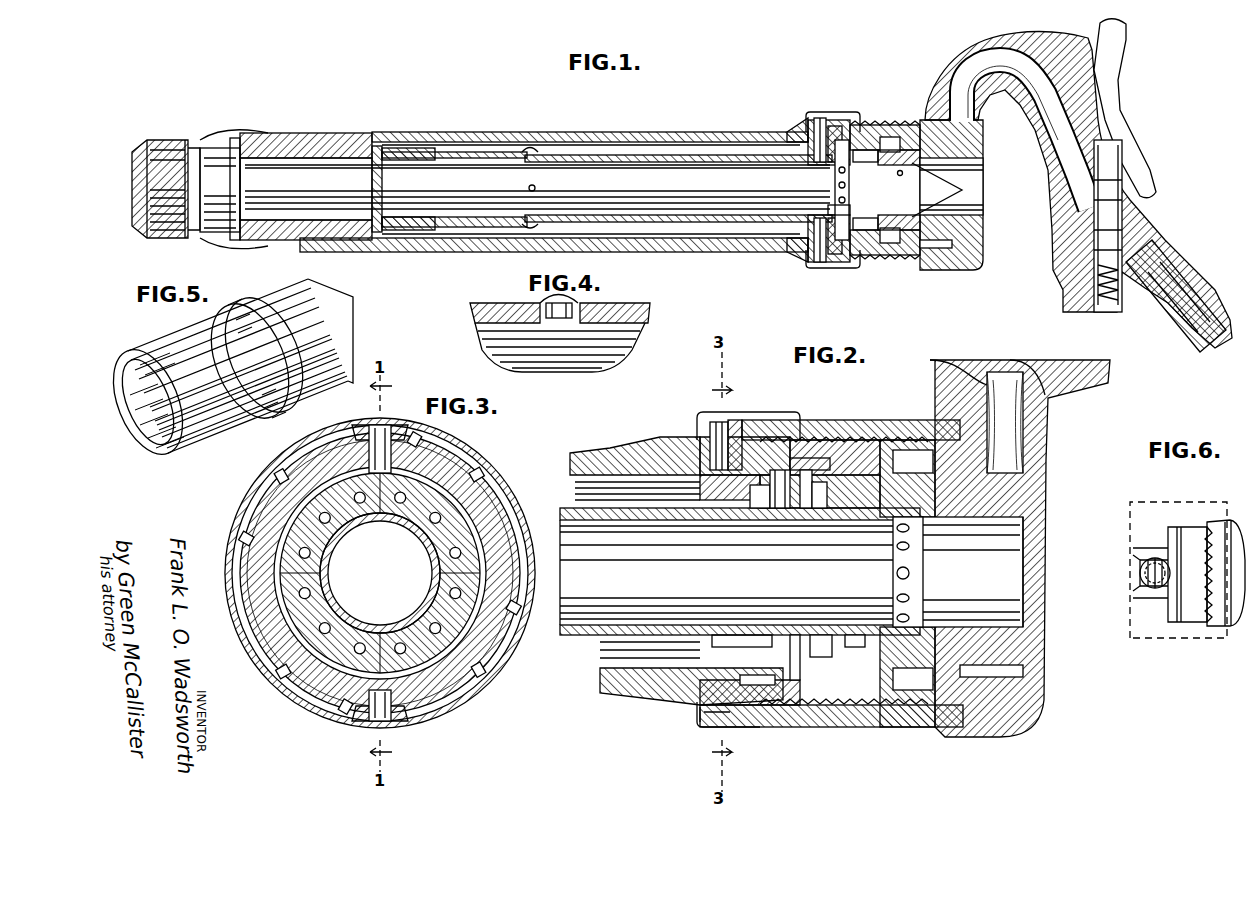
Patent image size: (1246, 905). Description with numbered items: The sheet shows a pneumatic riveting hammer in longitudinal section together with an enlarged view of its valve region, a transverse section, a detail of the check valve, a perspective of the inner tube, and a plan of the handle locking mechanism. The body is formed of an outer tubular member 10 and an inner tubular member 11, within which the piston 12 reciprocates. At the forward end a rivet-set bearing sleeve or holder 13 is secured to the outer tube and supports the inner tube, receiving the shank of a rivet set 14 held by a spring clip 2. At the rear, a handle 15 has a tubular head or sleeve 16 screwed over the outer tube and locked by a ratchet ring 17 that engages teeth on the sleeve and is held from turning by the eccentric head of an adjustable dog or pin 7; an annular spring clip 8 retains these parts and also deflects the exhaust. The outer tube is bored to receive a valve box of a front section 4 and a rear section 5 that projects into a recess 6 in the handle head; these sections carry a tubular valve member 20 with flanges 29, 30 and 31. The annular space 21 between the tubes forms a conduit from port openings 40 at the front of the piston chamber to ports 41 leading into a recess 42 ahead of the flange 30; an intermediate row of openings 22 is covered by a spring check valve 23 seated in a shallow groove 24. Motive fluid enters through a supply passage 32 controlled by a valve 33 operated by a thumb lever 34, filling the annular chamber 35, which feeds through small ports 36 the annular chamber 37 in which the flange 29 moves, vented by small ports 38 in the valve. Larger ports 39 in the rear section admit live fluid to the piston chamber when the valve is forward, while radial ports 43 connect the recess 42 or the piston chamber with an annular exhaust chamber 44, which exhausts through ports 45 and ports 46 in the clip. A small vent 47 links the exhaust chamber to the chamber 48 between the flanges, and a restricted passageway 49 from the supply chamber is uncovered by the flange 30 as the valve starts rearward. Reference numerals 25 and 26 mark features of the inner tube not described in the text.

In FIG. 1, the spring clip 2 is at (243, 138).
In FIG. 1, the front valve box section 4 is at (800, 133).
In FIG. 2, the front valve box section 4 is at (668, 458).
In FIG. 1, the rear valve box section 5 is at (958, 216).
In FIG. 2, the rear valve box section 5 is at (1010, 495).
In FIG. 1, the recess 6 is at (955, 243).
In FIG. 2, the recess 6 is at (1018, 671).
In FIG. 1, the adjustable dog or pin 7 is at (812, 120).
In FIG. 2, the adjustable dog or pin 7 is at (708, 426).
In FIG. 3, the adjustable dog or pin 7 is at (386, 426).
In FIG. 6, the adjustable dog or pin 7 is at (1140, 574).
In FIG. 1, the annular spring clip 8 is at (814, 112).
In FIG. 2, the annular spring clip 8 is at (704, 414).
In FIG. 6, the annular spring clip 8 is at (1150, 506).
In FIG. 1, the outer tubular member 10 is at (625, 133).
In FIG. 2, the outer tubular member 10 is at (605, 458).
In FIG. 3, the outer tubular member 10 is at (380, 573).
In FIG. 1, the inner tubular member 11 is at (673, 160).
In FIG. 2, the inner tubular member 11 is at (566, 508).
In FIG. 3, the inner tubular member 11 is at (380, 573).
In FIG. 5, the inner tubular member 11 is at (340, 327).
In FIG. 1, the piston 12 is at (462, 172).
In FIG. 1, the rivet-set bearing sleeve or holder 13 is at (330, 150).
In FIG. 1, the rivet set 14 is at (276, 170).
In FIG. 1, the handle 15 is at (940, 80).
In FIG. 2, the handle 15 is at (985, 372).
In FIG. 1, the tubular head or sleeve 16 is at (910, 137).
In FIG. 2, the tubular head or sleeve 16 is at (906, 440).
In FIG. 6, the tubular head or sleeve 16 is at (1217, 525).
In FIG. 1, the ratchet ring 17 is at (835, 124).
In FIG. 2, the ratchet ring 17 is at (736, 420).
In FIG. 6, the ratchet ring 17 is at (1187, 527).
In FIG. 1, the valve member 20 is at (903, 176).
In FIG. 2, the valve member 20 is at (822, 650).
In FIG. 1, the annular space 21 is at (582, 150).
In FIG. 2, the annular space 21 is at (615, 651).
In FIG. 1, the openings 22 is at (530, 224).
In FIG. 4, the openings 22 is at (556, 320).
In FIG. 1, the spring check valve 23 is at (532, 150).
In FIG. 4, the spring check valve 23 is at (545, 300).
In FIG. 5, the spring check valve 23 is at (282, 328).
In FIG. 4, the shallow groove 24 is at (590, 323).
In FIG. 5, the slot 25 is at (250, 428).
In FIG. 5, the slot 26 is at (266, 353).
In FIG. 1, the valve flange 29 is at (920, 256).
In FIG. 2, the valve flange 29 is at (815, 535).
In FIG. 1, the valve flange 30 is at (870, 258).
In FIG. 2, the valve flange 30 is at (790, 530).
In FIG. 1, the valve flange 31 is at (842, 262).
In FIG. 2, the valve flange 31 is at (758, 522).
In FIG. 1, the supply passage 32 is at (985, 75).
In FIG. 2, the supply passage 32 is at (1022, 385).
In FIG. 1, the valve 33 is at (1120, 232).
In FIG. 1, the thumb lever 34 is at (1122, 90).
In FIG. 1, the annular chamber 35 is at (970, 130).
In FIG. 2, the annular chamber 35 is at (1012, 442).
In FIG. 1, the small ports 36 is at (962, 148).
In FIG. 2, the small ports 36 is at (880, 462).
In FIG. 1, the annular chamber 37 is at (880, 125).
In FIG. 2, the annular chamber 37 is at (852, 440).
In FIG. 1, the small ports 38 is at (945, 175).
In FIG. 2, the small ports 38 is at (856, 640).
In FIG. 1, the larger ports 39 is at (935, 258).
In FIG. 2, the larger ports 39 is at (910, 575).
In FIG. 1, the port openings 40 is at (382, 160).
In FIG. 1, the ports 41 is at (820, 222).
In FIG. 2, the ports 41 is at (742, 648).
In FIG. 3, the ports 41 is at (358, 503).
In FIG. 1, the recess 42 is at (855, 135).
In FIG. 2, the recess 42 is at (793, 645).
In FIG. 1, the radial ports 43 is at (849, 190).
In FIG. 2, the radial ports 43 is at (765, 528).
In FIG. 3, the radial ports 43 is at (255, 528).
In FIG. 1, the annular chamber 44 is at (822, 262).
In FIG. 2, the annular chamber 44 is at (762, 420).
In FIG. 1, the ports 45 is at (812, 268).
In FIG. 2, the ports 45 is at (742, 703).
In FIG. 3, the ports 45 is at (262, 556).
In FIG. 2, the ports 46 is at (722, 728).
In FIG. 3, the ports 46 is at (268, 666).
In FIG. 2, the small vent 47 is at (792, 440).
In FIG. 2, the chamber 48 is at (816, 450).
In FIG. 1, the restricted passageway 49 is at (890, 262).
In FIG. 2, the restricted passageway 49 is at (850, 710).